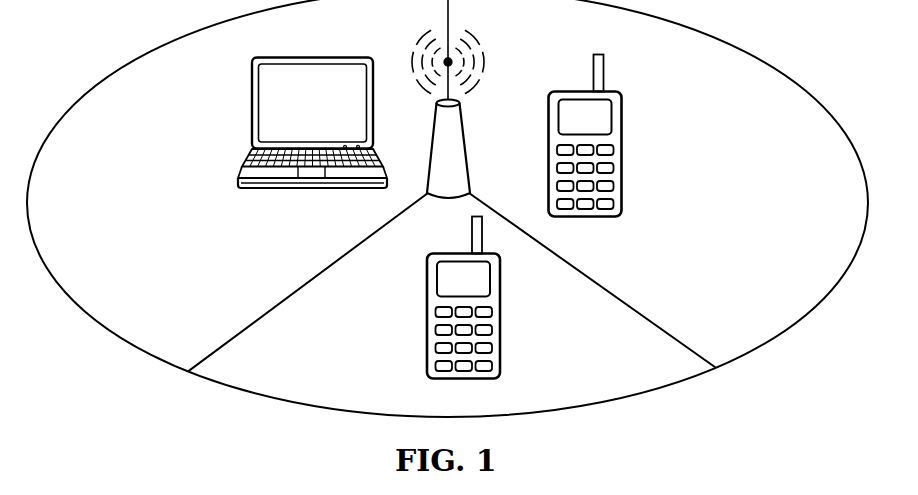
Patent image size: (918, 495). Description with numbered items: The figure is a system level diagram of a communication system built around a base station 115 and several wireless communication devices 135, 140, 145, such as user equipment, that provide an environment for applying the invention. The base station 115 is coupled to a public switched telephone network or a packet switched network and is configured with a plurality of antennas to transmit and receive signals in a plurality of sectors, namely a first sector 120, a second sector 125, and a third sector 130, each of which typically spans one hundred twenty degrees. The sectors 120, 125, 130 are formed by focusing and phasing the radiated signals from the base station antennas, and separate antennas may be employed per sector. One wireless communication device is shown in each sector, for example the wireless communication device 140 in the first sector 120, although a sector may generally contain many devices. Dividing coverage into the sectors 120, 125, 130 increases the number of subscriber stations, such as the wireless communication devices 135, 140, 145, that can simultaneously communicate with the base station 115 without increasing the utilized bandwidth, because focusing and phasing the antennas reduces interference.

The base station 115 is at (465, 148).
The first sector 120 is at (821, 235).
The second sector 125 is at (384, 367).
The third sector 130 is at (187, 300).
The wireless communication device 135 is at (252, 105).
The wireless communication device 140 is at (623, 153).
The wireless communication device 145 is at (500, 317).